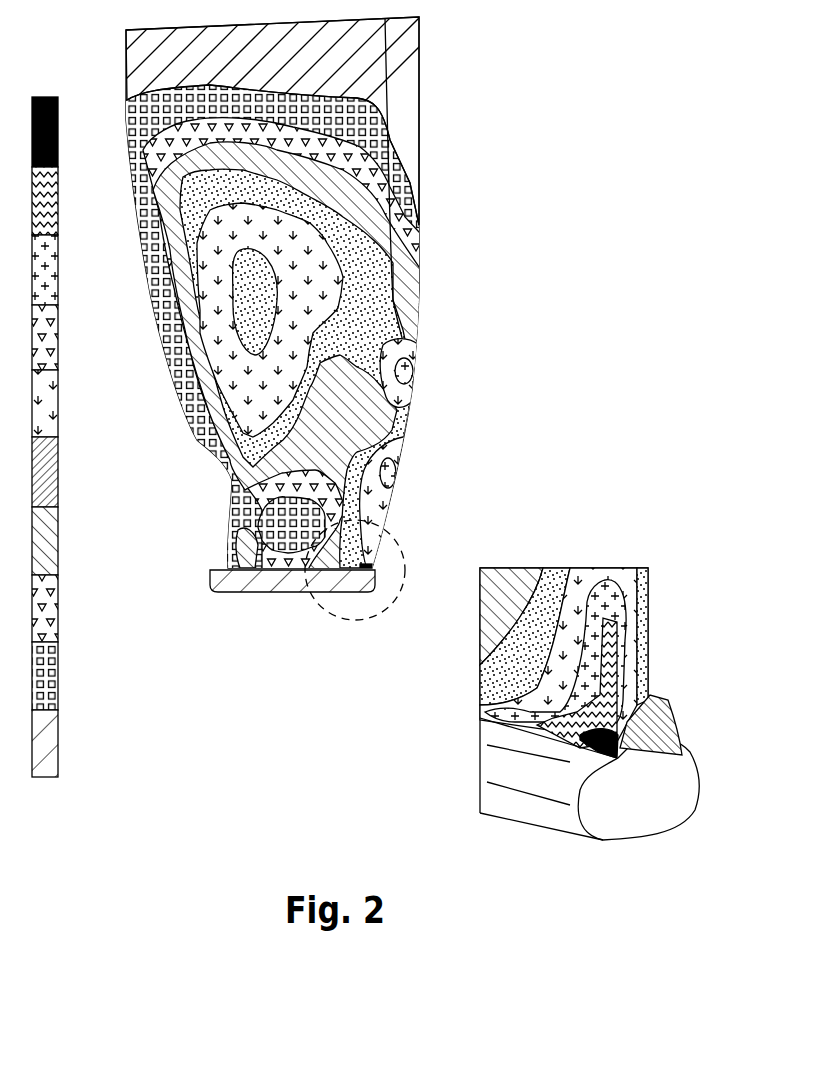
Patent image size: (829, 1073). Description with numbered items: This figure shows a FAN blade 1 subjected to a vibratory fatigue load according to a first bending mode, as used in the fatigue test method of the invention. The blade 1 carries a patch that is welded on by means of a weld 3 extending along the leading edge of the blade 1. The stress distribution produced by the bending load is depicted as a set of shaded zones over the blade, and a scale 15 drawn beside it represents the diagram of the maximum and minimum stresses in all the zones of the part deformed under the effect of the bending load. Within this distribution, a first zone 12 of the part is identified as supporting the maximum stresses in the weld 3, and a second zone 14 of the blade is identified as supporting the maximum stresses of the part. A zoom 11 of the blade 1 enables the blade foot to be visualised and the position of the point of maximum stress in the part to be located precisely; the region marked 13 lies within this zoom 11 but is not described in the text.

The blade 1 is at (528, 118).
The weld 3 is at (387, 65).
The zoom 11 is at (680, 627).
The first zone 12 is at (398, 336).
The layer region 13 is at (672, 735).
The second zone 14 is at (346, 620).
The scale 15 is at (58, 700).